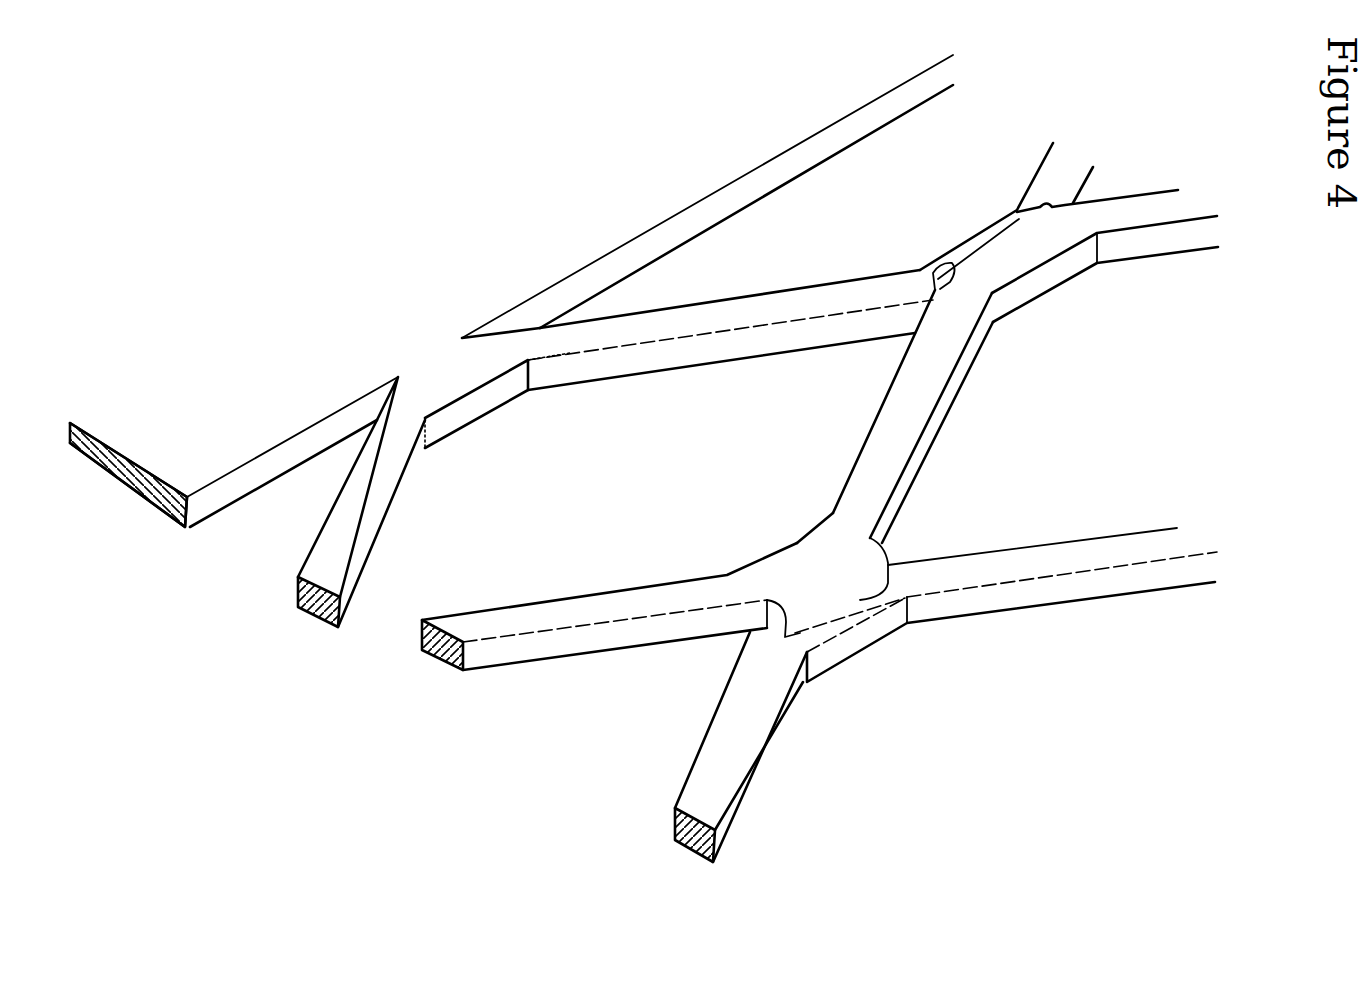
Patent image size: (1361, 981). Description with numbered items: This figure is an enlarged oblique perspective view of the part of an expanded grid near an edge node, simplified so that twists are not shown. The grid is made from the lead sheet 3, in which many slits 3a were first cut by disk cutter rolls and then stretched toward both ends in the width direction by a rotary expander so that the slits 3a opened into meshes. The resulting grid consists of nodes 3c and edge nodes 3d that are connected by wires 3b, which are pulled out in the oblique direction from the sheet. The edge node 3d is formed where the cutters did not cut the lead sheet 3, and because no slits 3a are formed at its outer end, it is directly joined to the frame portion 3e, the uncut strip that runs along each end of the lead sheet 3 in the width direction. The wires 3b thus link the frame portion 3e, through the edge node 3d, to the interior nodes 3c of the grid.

The lead sheet 3 is at (366, 668).
The slits 3a is at (843, 173).
The wires 3b is at (373, 483).
The node 3c is at (798, 553).
The edge node 3d is at (460, 360).
The frame portion 3e is at (175, 462).